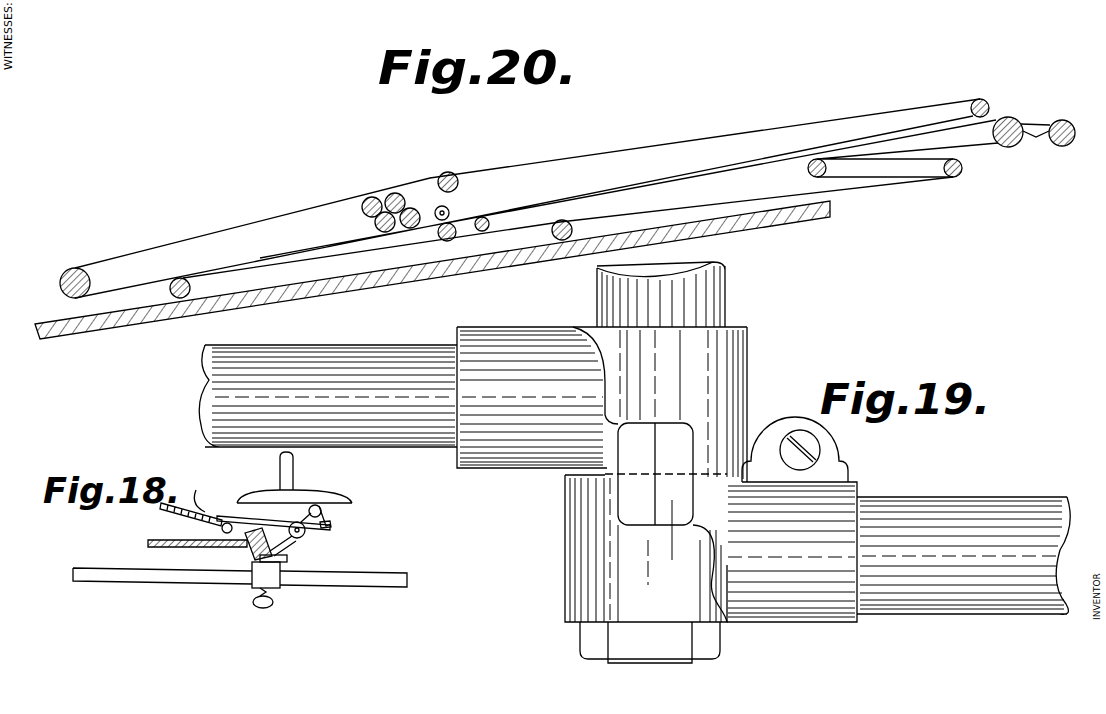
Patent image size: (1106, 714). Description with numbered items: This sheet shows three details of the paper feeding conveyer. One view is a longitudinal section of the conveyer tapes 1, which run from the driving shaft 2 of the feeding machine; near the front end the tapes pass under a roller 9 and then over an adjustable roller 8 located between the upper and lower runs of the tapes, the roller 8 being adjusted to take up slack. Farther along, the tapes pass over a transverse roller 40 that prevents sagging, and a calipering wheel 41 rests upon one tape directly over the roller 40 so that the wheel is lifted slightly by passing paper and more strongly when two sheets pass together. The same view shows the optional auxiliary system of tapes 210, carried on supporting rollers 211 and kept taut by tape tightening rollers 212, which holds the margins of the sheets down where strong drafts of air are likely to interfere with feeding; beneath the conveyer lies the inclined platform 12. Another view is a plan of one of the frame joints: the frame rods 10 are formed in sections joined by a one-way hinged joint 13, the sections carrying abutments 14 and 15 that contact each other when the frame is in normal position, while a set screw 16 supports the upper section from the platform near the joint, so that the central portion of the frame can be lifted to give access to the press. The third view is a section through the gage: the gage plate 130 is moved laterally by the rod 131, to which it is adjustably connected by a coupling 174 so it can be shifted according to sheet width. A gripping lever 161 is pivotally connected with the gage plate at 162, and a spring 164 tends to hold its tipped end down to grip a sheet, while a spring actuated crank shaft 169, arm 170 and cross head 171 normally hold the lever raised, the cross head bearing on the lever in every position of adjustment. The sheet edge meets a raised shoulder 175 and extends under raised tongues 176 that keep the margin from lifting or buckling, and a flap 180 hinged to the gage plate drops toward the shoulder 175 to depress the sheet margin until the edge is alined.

In FIG. 20, the conveyer tapes 1 is at (324, 268).
In FIG. 20, the driving shaft 2 is at (1062, 146).
In FIG. 20, the adjustable roller 8 is at (808, 172).
In FIG. 20, the roller 9 is at (961, 173).
In FIG. 19, the frame rods 10 is at (634, 479).
In FIG. 20, the inclined platform 12 is at (761, 226).
In FIG. 19, the one-way hinged joint 13 is at (628, 474).
In FIG. 19, the abutment 14 is at (666, 474).
In FIG. 19, the abutment 15 is at (655, 474).
In FIG. 19, the set screw 16 is at (822, 453).
In FIG. 20, the transverse roller 40 is at (438, 234).
In FIG. 20, the calipering wheel 41 is at (449, 210).
In FIG. 20, the auxiliary tapes 210 is at (664, 175).
In FIG. 20, the supporting rollers 211 is at (92, 282).
In FIG. 20, the tape tightening rollers 212 is at (372, 197).
In FIG. 18, the gage plate 130 is at (170, 541).
In FIG. 18, the rod 131 is at (394, 568).
In FIG. 18, the lever 161 is at (275, 513).
In FIG. 18, the pivot 162 is at (303, 535).
In FIG. 18, the spring 164 is at (296, 552).
In FIG. 18, the spring actuated crank shaft 169 is at (227, 522).
In FIG. 18, the arm 170 is at (294, 463).
In FIG. 18, the cross head 171 is at (336, 496).
In FIG. 18, the coupling 174 is at (282, 590).
In FIG. 18, the raised shoulder 175 is at (243, 555).
In FIG. 18, the raised tongues 176 is at (208, 492).
In FIG. 18, the flap 180 is at (161, 505).